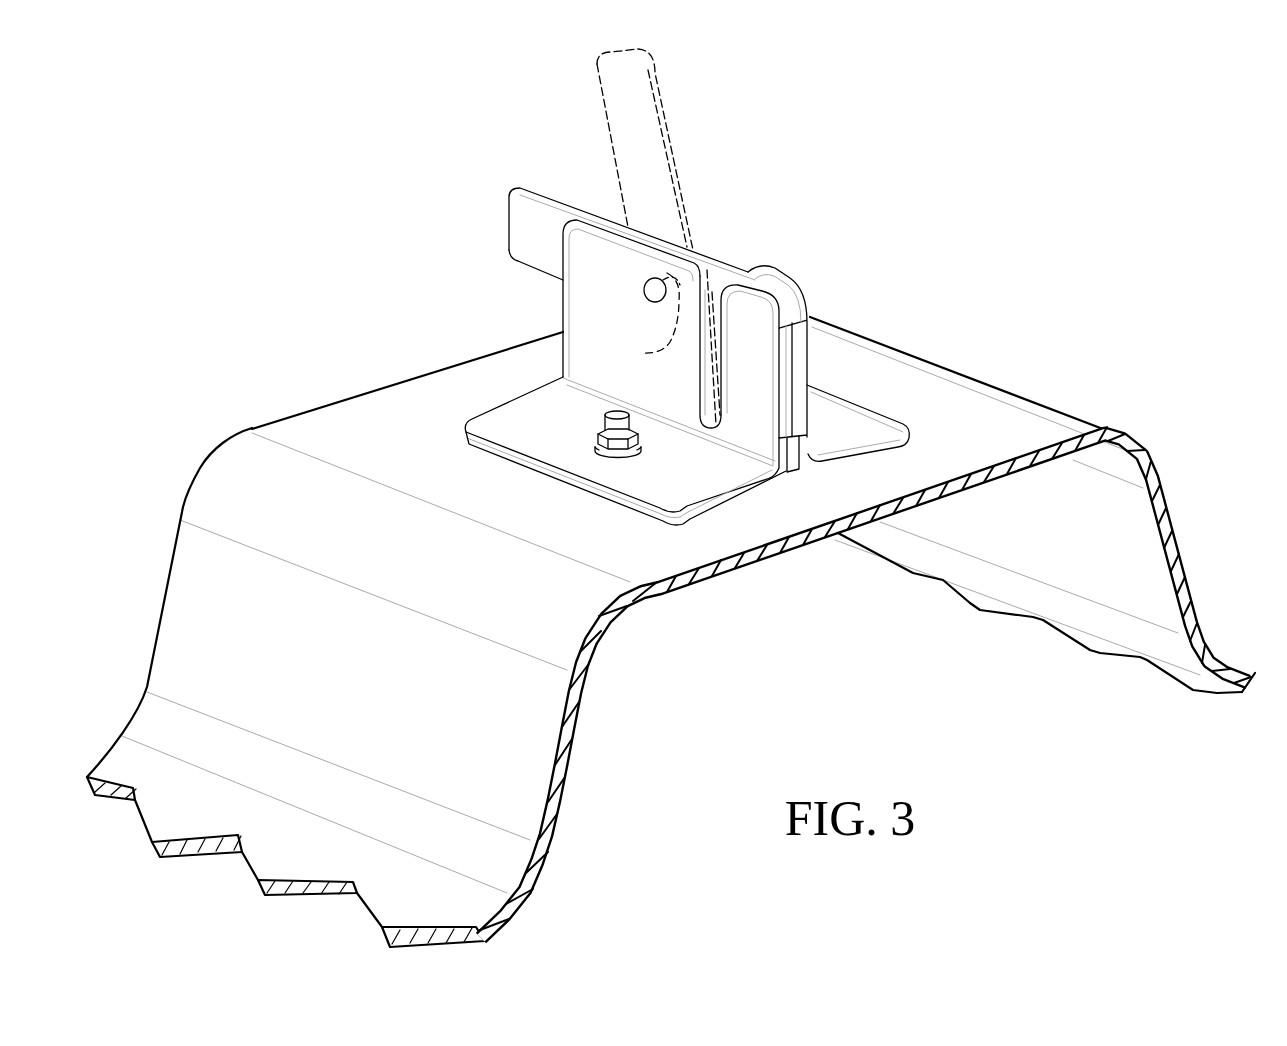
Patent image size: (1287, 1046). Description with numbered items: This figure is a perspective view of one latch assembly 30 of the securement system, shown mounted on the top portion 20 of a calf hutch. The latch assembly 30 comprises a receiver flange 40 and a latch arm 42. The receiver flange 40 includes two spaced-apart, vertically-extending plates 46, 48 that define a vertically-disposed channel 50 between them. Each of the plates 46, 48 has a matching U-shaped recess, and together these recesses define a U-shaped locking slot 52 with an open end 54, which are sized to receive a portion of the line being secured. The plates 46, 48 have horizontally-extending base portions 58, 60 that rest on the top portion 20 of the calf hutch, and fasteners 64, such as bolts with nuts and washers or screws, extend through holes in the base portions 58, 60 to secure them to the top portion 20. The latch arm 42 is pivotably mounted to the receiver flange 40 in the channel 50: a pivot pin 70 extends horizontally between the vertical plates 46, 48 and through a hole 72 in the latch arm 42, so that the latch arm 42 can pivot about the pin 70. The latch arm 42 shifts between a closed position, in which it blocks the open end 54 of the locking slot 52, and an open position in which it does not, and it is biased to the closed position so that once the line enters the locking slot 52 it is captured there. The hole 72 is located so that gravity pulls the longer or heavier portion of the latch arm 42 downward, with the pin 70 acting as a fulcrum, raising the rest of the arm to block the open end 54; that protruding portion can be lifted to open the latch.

The top portion 20 is at (967, 420).
The latch assembly 30 is at (788, 178).
The receiver flange 40 is at (685, 417).
The latch arm 42 is at (513, 227).
The vertically-extending plate 46 is at (580, 348).
The vertically-extending plate 48 is at (763, 271).
The channel 50 is at (799, 476).
The locking slot 52 is at (702, 397).
The open end 54 is at (714, 296).
The base portion 58 is at (517, 423).
The base portion 60 is at (847, 413).
The fastener 64 is at (603, 421).
The pivot pin 70 is at (650, 293).
The hole 72 is at (649, 352).